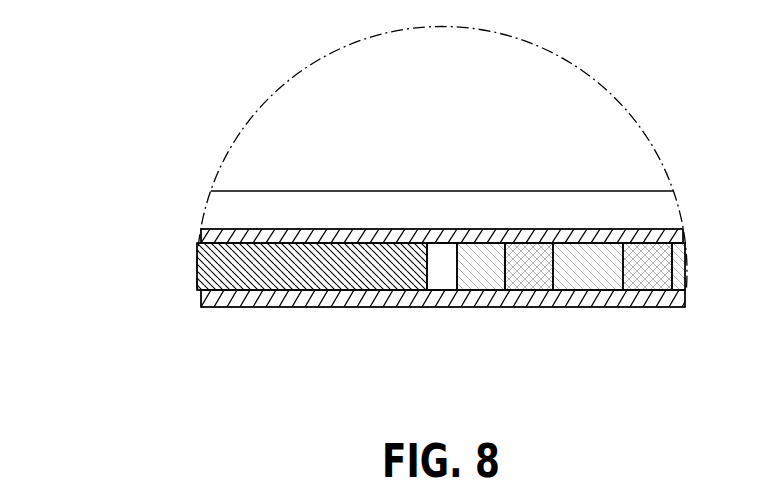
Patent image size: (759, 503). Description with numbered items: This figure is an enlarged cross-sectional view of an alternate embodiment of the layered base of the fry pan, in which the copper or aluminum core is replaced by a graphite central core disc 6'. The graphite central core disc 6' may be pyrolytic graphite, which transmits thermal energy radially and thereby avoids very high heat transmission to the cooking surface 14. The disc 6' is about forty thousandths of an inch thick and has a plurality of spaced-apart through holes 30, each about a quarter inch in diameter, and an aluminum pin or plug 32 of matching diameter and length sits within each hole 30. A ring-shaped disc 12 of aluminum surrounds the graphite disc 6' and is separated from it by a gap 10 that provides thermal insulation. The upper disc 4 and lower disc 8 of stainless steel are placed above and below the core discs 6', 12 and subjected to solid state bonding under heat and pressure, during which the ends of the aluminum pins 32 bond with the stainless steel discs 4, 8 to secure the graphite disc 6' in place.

The upper disc 4 is at (248, 228).
The cooking surface 14 is at (564, 228).
The ring-shaped disc 12 is at (197, 272).
The lower disc 8 is at (272, 308).
The gap 10 is at (446, 277).
The graphite central core disc 6' is at (539, 318).
The through holes 30 is at (505, 270).
The aluminum pin or plug 32 is at (537, 275).